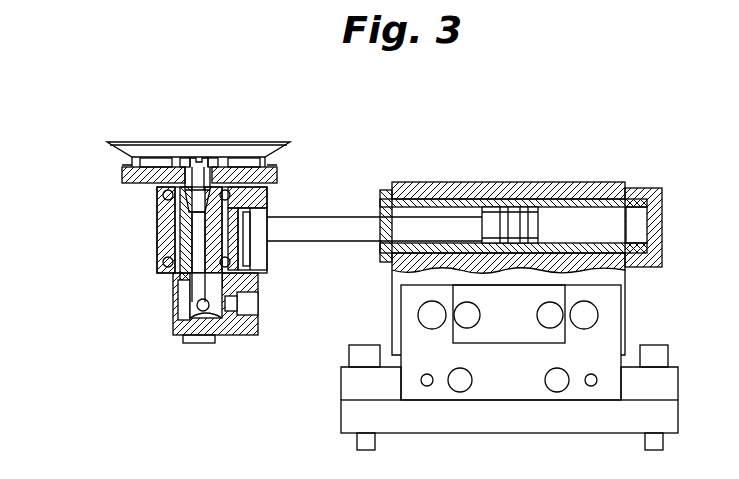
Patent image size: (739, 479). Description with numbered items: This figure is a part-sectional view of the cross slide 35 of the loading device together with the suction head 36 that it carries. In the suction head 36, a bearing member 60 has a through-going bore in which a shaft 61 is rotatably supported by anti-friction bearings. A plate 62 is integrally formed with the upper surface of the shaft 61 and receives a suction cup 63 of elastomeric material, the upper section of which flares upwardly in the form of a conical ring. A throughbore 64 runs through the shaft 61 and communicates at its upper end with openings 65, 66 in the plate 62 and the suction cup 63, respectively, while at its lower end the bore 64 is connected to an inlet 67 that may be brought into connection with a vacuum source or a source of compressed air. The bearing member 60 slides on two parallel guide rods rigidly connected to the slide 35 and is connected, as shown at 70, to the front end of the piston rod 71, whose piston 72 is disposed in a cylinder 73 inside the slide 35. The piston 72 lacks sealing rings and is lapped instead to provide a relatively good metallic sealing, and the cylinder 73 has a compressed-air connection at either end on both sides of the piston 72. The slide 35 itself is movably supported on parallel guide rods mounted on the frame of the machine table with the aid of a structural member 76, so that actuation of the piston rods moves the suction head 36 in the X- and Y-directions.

The cross slide 35 is at (558, 182).
The suction head 36 is at (205, 155).
The bearing member 60 is at (157, 232).
The shaft 61 is at (177, 277).
The plate 62 is at (276, 179).
The suction cup 63 is at (122, 155).
The throughbore 64 is at (178, 308).
The opening in the plate 65 is at (190, 162).
The opening in the suction cup 66 is at (208, 168).
The inlet 67 is at (247, 317).
The connection of bearing member to piston rod 70 is at (245, 247).
The piston rod 71 is at (348, 238).
The piston 72 is at (500, 212).
The cylinder 73 is at (600, 207).
The structural member 76 is at (355, 417).